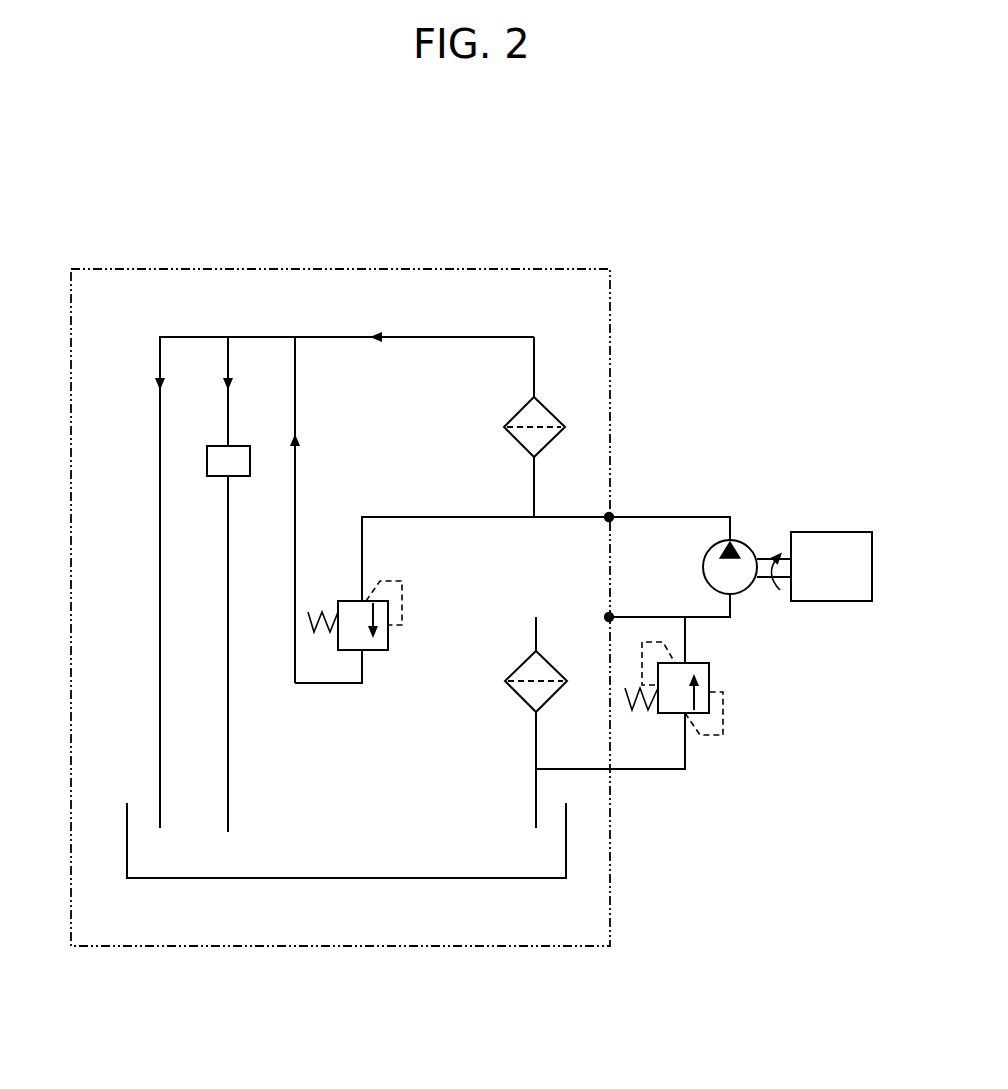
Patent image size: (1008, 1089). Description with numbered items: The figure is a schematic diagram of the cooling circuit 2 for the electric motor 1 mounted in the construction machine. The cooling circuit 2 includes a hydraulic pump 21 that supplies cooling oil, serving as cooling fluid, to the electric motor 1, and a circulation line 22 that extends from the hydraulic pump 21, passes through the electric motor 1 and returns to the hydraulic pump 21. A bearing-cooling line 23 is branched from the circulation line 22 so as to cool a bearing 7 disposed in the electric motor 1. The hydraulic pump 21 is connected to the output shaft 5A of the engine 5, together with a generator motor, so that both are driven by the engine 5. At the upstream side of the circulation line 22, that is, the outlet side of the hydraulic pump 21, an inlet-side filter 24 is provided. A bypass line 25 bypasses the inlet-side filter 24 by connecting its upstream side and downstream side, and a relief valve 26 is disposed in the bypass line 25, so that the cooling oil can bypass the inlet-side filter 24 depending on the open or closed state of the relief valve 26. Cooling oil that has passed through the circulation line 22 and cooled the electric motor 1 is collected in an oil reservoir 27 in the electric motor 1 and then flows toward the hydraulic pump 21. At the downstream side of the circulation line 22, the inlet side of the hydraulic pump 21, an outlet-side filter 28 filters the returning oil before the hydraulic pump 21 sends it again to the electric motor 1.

The electric motor 1 is at (350, 269).
The cooling circuit 2 is at (668, 195).
The engine 5 is at (820, 532).
The output shaft 5A is at (760, 580).
The bearing 7 is at (230, 477).
The hydraulic pump 21 is at (745, 544).
The circulation line 22 is at (662, 473).
The bearing-cooling line 23 is at (228, 354).
The inlet-side filter 24 is at (553, 412).
The bypass line 25 is at (478, 518).
The relief valve 26 is at (388, 640).
The oil reservoir 27 is at (435, 878).
The outlet-side filter 28 is at (550, 700).